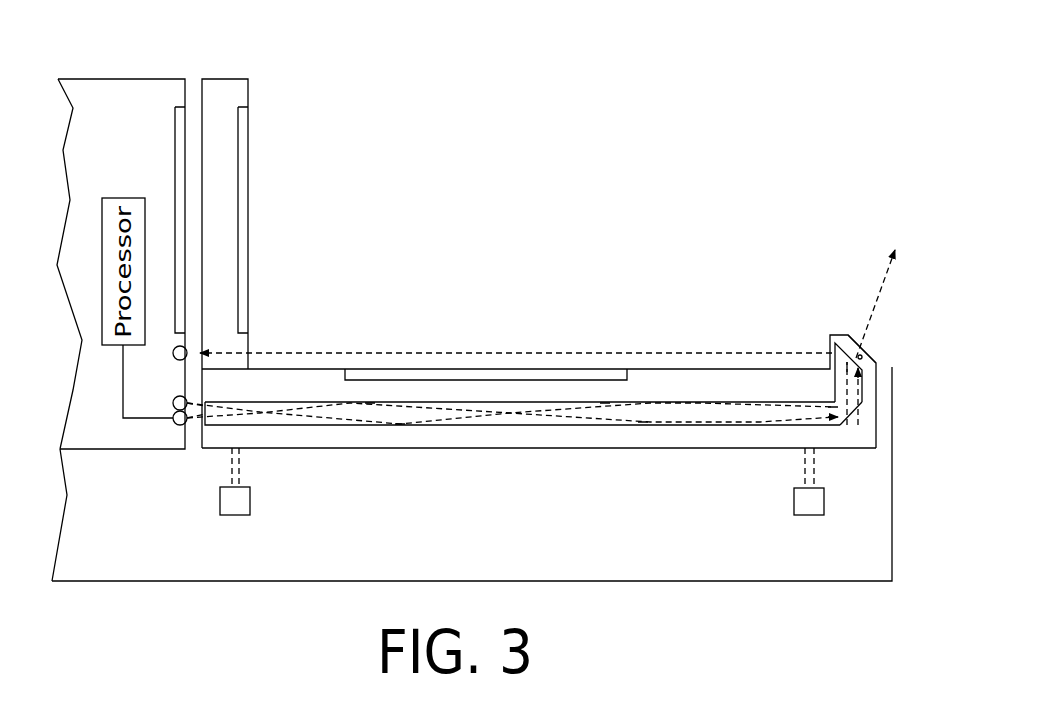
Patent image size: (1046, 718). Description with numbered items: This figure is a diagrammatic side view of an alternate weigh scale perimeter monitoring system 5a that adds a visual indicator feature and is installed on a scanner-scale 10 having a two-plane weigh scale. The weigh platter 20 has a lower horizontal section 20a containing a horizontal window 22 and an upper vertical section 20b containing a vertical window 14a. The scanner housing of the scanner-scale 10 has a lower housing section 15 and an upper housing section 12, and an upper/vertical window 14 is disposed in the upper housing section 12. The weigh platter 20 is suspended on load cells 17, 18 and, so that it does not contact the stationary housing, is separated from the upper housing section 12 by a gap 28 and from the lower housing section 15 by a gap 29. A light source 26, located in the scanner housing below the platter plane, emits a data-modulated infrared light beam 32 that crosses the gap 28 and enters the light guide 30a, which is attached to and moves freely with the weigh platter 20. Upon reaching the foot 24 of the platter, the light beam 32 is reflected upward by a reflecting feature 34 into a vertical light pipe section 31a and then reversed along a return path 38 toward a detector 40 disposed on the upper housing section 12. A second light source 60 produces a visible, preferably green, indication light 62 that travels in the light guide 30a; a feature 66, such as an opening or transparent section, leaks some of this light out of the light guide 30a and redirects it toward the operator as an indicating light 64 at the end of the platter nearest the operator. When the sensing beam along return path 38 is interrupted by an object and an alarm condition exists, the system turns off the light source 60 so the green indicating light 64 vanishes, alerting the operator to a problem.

The weigh scale perimeter monitoring system 5a is at (451, 128).
The scanner-scale 10 is at (196, 72).
The upper housing section 12 is at (170, 78).
The upper/vertical window 14 is at (181, 248).
The vertical window 14a is at (243, 130).
The lower housing section 15 is at (633, 562).
The load cell 17 is at (238, 505).
The load cell 18 is at (798, 504).
The weigh platter 20 is at (545, 452).
The horizontal section 20a is at (440, 437).
The vertical section 20b is at (235, 93).
The horizontal window 22 is at (366, 376).
The foot of the weigh platter 24 is at (853, 345).
The light source 26 is at (176, 424).
The gap 28 is at (194, 445).
The gap 29 is at (884, 445).
The light guide 30a is at (287, 428).
The vertical light pipe section 31a is at (832, 385).
The light beam 32 is at (772, 427).
The reflecting feature 34 is at (856, 423).
The return path 38 is at (509, 360).
The detector 40 is at (186, 349).
The light source 60 is at (174, 399).
The indication light 62 is at (357, 420).
The indicating light 64 is at (880, 282).
The feature 66 is at (862, 358).